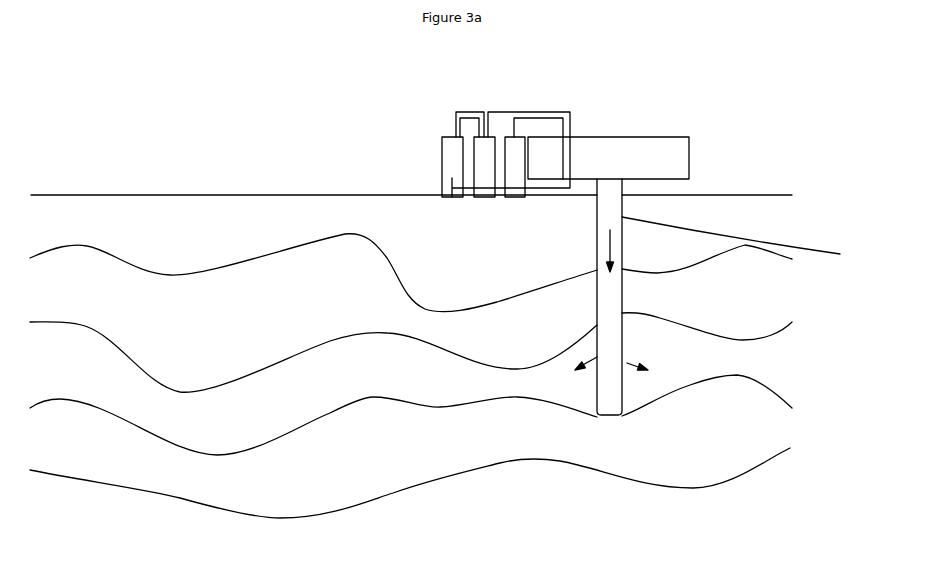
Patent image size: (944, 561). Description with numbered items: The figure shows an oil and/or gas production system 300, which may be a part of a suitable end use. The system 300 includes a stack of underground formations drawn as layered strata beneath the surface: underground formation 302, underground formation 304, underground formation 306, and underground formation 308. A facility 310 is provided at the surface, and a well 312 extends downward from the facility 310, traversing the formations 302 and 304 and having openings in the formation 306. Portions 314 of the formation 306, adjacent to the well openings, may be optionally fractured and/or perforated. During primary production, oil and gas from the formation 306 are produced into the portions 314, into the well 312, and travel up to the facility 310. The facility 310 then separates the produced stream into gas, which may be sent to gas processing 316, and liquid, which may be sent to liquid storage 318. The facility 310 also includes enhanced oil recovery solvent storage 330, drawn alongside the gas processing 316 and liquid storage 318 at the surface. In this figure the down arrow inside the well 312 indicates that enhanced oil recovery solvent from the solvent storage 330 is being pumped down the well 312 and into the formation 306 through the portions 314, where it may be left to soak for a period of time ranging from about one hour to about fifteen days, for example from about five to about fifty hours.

The system 300 is at (318, 148).
The underground formation 302 is at (411, 271).
The underground formation 304 is at (411, 337).
The underground formation 306 is at (411, 397).
The underground formation 308 is at (410, 462).
The facility 310 is at (598, 165).
The well 312 is at (750, 242).
The portions 314 is at (632, 375).
The gas processing 316 is at (513, 153).
The liquid storage 318 is at (487, 154).
The enhanced oil recovery solvent storage 330 is at (452, 147).